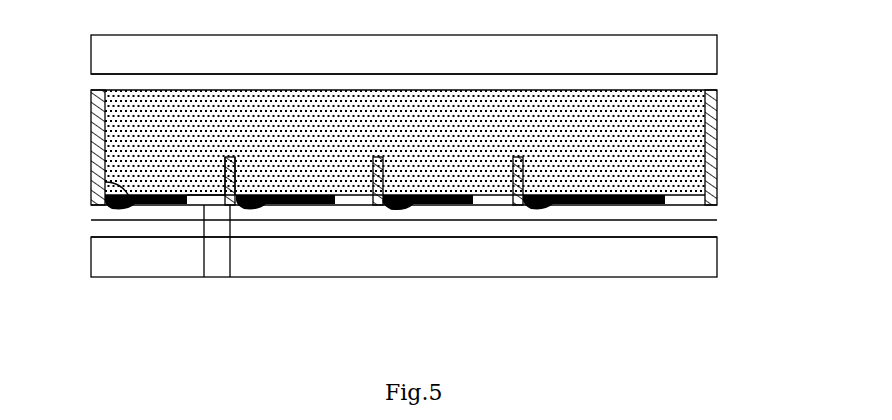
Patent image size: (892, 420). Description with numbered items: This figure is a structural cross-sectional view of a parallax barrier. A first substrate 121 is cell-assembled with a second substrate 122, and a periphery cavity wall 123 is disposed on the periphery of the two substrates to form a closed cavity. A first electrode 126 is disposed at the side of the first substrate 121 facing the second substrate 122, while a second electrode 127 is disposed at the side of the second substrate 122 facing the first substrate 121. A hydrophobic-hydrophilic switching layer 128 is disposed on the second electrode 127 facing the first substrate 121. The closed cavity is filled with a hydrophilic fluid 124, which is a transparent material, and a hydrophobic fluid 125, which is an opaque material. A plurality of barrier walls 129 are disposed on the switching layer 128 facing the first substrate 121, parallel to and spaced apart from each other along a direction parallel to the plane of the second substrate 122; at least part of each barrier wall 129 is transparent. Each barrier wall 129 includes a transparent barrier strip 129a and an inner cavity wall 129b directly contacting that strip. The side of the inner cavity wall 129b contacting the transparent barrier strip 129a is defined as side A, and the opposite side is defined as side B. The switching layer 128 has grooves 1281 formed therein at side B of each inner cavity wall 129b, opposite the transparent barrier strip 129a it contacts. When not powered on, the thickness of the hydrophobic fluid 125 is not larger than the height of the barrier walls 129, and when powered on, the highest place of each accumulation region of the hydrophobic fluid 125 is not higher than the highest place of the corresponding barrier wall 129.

The first substrate 121 is at (692, 56).
The first electrode 126 is at (692, 81).
The periphery cavity wall 123 is at (705, 142).
The hydrophilic fluid 124 is at (120, 150).
The hydrophobic fluid 125 is at (106, 180).
The hydrophobic-hydrophilic switching layer 128 is at (692, 212).
The groove 1281 is at (397, 207).
The second electrode 127 is at (692, 232).
The second substrate 122 is at (692, 262).
The transparent barrier strip 129a is at (193, 253).
The inner cavity wall 129b is at (242, 253).
The barrier wall 129 is at (255, 300).
The side A is at (225, 160).
The side B is at (236, 160).